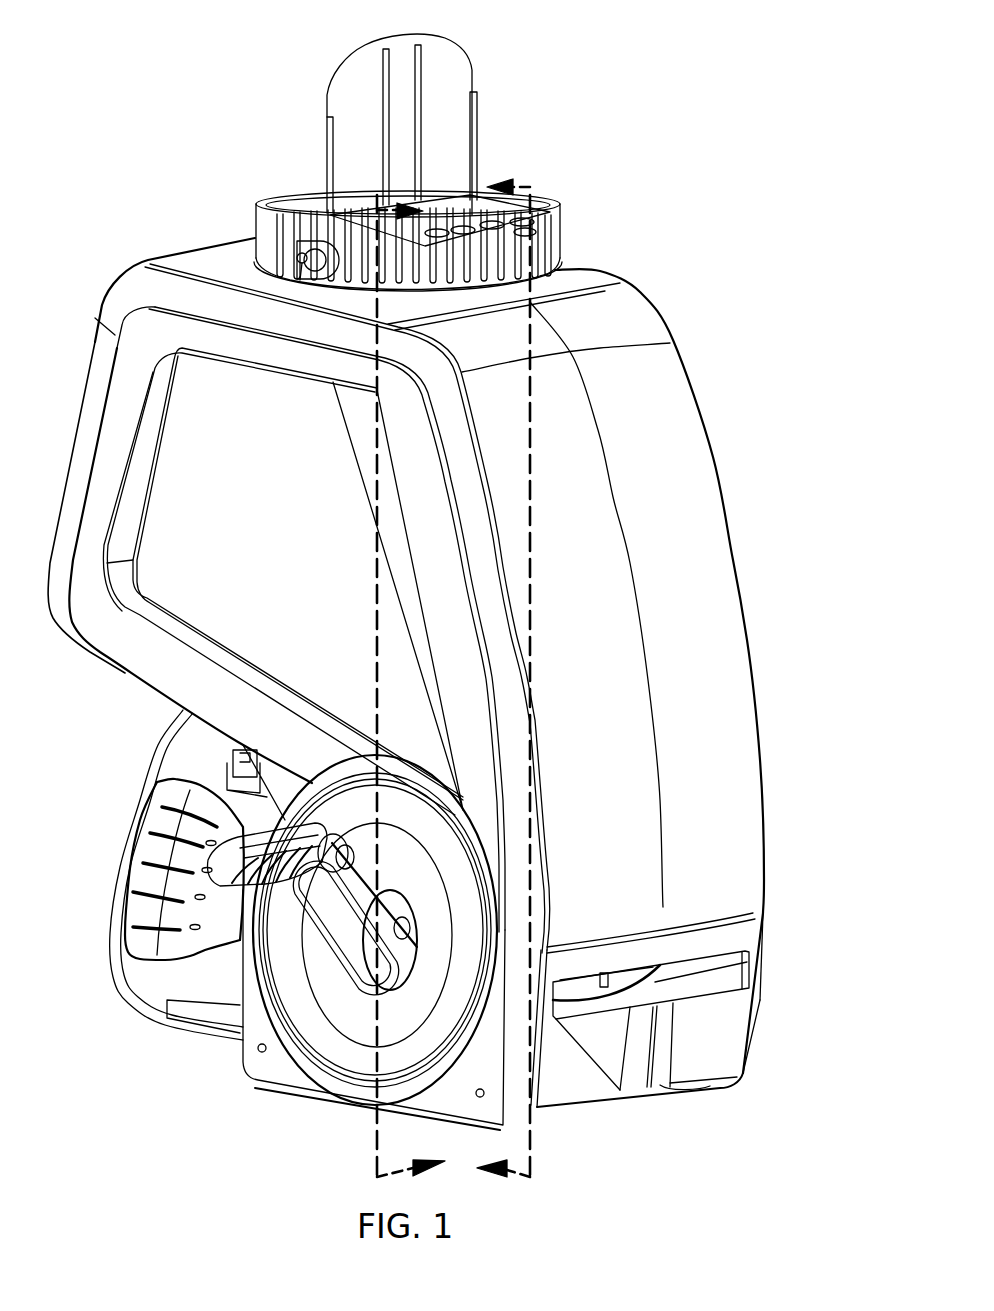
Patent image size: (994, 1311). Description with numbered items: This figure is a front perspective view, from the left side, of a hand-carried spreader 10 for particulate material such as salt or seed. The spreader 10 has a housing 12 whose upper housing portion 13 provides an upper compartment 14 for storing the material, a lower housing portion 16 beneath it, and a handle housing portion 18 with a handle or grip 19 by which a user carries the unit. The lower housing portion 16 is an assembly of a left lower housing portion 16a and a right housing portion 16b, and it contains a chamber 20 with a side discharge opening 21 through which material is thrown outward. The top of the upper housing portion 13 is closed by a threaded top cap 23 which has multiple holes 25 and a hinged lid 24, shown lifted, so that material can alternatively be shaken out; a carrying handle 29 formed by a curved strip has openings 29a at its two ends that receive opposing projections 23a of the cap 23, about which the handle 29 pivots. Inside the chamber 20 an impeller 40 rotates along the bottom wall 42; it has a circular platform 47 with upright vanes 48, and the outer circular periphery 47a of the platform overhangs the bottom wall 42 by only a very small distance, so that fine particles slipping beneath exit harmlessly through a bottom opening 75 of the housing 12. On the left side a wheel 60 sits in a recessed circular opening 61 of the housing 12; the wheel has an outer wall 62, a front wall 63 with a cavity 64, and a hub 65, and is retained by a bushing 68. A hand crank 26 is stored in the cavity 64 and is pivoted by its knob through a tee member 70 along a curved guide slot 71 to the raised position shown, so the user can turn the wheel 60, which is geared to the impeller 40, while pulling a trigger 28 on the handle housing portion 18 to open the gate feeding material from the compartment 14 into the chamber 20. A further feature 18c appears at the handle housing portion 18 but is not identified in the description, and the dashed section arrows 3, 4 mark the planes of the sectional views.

The spreader 10 is at (715, 462).
The housing 12 is at (750, 640).
The upper housing portion 13 is at (763, 800).
The upper compartment 14 is at (677, 364).
The lower housing portion 16 is at (760, 1013).
The left lower housing portion 16a is at (563, 1093).
The right housing portion 16b is at (750, 1052).
The handle housing portion 18 is at (120, 988).
The handle latch 18c is at (240, 752).
The handle or grip 19 is at (150, 842).
The chamber 20 is at (702, 992).
The side discharge opening 21 is at (760, 960).
The top cap 23 is at (560, 238).
The projections 23a is at (304, 265).
The hinged cover or lid 24 is at (472, 68).
The holes 25 is at (470, 225).
The hand crank 26 is at (225, 888).
The trigger 28 is at (268, 770).
The handle 29 is at (262, 226).
The openings 29a is at (282, 255).
The section line 3 is at (411, 682).
The section line 4 is at (503, 682).
The impeller 40 is at (588, 1054).
The bottom wall 42 is at (693, 965).
The circular platform 47 is at (632, 970).
The outer circular periphery 47a is at (608, 1000).
The vanes 48 is at (602, 972).
The wheel 60 is at (342, 1085).
The recessed circular opening 61 is at (462, 826).
The outer wall 62 is at (452, 1070).
The front wall 63 is at (300, 990).
The cavity 64 is at (395, 988).
The hub 65 is at (405, 962).
The bushing 68 is at (393, 910).
The tee member 70 is at (333, 835).
The curved guide slot 71 is at (358, 861).
The bottom opening 75 is at (672, 1083).